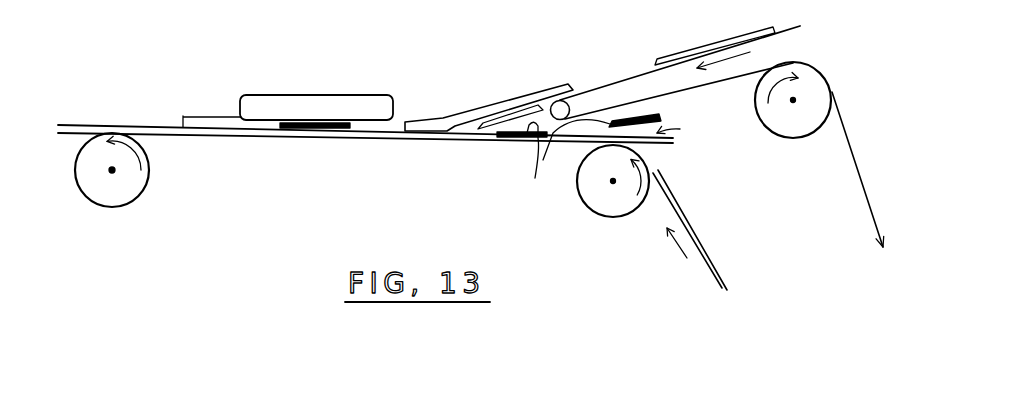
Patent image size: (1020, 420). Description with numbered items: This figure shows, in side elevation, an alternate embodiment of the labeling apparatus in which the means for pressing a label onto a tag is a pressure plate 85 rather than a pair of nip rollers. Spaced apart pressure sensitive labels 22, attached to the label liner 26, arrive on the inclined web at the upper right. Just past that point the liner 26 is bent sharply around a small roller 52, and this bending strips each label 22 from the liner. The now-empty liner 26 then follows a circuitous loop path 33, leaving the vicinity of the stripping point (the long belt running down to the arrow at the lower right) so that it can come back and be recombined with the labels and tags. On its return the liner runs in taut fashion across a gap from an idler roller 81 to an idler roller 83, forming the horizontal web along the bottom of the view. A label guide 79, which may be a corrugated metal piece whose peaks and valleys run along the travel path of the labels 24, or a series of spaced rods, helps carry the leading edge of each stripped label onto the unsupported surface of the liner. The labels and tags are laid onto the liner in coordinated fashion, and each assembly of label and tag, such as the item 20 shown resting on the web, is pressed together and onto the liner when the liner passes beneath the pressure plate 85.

The sheet 20 is at (210, 117).
The pressure plate 85 is at (327, 100).
The label guide 79 is at (502, 112).
The small roller 52 is at (554, 103).
The pressure sensitive label 22 is at (694, 50).
The label liner 26 is at (713, 82).
The labels 24 is at (594, 161).
The loop path 33 is at (867, 215).
The idler roller 83 is at (137, 182).
The idler roller 81 is at (612, 205).